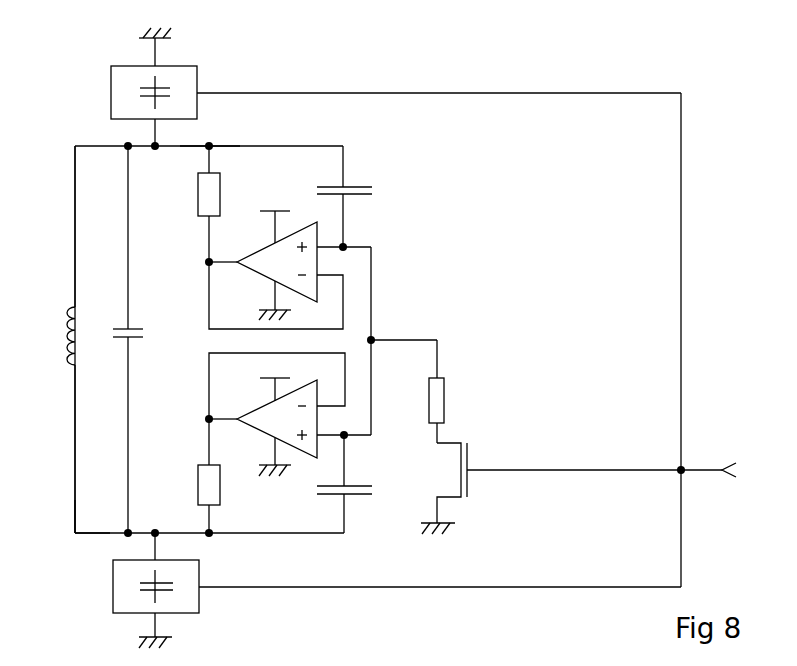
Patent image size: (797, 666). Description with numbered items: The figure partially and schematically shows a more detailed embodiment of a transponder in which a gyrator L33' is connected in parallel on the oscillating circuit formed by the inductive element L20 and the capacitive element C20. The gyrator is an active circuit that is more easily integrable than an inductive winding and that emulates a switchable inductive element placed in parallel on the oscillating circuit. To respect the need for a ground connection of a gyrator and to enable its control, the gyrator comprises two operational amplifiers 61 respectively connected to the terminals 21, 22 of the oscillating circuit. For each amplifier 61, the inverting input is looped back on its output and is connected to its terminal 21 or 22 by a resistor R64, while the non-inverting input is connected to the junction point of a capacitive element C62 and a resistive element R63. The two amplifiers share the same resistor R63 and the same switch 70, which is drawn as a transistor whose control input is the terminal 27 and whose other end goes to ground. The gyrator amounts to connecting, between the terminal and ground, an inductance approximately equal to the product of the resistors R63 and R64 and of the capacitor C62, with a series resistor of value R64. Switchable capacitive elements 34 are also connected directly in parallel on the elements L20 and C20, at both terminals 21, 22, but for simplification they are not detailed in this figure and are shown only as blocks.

The switchable capacitive element 34 is at (197, 78).
The terminal 21 is at (209, 146).
The terminal 22 is at (75, 533).
The operational amplifier 61 is at (305, 221).
The switch 70 is at (444, 488).
The output terminal 27 is at (616, 473).
The gyrator L33' is at (424, 311).
The inductive element L20 is at (47, 339).
The capacitive element C20 is at (148, 339).
The resistor R64 is at (188, 339).
The capacitive element C62 is at (356, 339).
The resistive element R63 is at (457, 391).